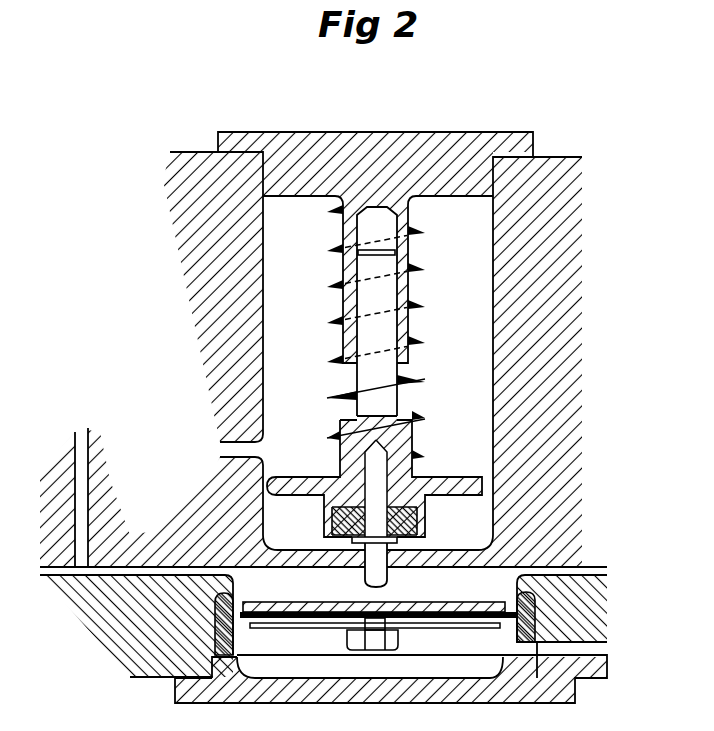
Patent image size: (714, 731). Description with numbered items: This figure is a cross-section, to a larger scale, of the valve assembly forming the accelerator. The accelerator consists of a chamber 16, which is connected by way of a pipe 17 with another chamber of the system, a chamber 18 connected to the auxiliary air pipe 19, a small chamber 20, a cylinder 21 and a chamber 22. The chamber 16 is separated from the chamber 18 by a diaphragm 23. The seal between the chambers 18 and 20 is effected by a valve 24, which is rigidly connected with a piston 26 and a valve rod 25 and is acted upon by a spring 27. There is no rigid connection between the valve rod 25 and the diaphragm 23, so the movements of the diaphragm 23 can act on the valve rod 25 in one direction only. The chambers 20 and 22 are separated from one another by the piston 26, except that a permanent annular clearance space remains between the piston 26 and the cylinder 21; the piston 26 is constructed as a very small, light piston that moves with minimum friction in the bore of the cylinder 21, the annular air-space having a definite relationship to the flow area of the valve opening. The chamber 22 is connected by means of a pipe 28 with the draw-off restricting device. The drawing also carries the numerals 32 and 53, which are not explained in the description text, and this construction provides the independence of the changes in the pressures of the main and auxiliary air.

The chamber 16 is at (267, 581).
The pipe 17 is at (89, 496).
The chamber 18 is at (257, 643).
The auxiliary air pipe 19 is at (592, 652).
The small chamber 20 is at (468, 538).
The cylinder 21 is at (498, 402).
The chamber 22 is at (468, 282).
The diaphragm 23 is at (537, 617).
The valve 24 is at (420, 527).
The valve rod 25 is at (384, 335).
The piston 26 is at (487, 481).
The spring 27 is at (425, 233).
The pipe 28 is at (223, 449).
The cover plate 32 is at (607, 575).
The gap 53 is at (116, 571).